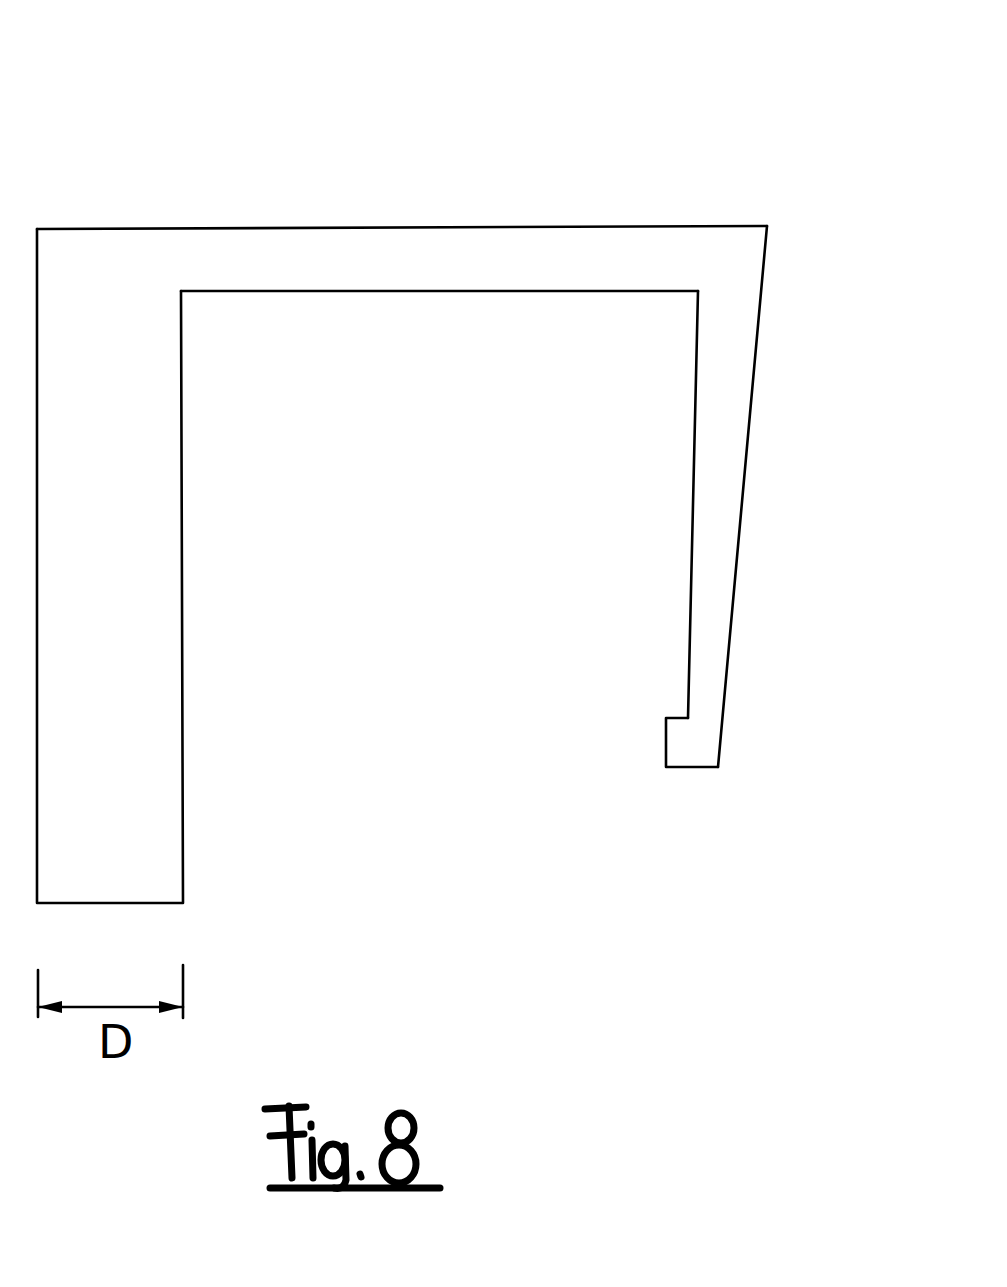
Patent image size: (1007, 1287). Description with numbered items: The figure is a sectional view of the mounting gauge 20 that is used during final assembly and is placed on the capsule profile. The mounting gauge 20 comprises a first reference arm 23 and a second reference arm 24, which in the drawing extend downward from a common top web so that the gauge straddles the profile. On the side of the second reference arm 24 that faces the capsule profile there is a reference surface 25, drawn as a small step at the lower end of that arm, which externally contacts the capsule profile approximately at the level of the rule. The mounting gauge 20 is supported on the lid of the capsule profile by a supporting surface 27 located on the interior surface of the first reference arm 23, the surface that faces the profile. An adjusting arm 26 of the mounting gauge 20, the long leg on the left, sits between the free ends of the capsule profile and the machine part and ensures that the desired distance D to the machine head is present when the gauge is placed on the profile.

The mounting gauge 20 is at (380, 122).
The first reference arm 23 is at (520, 241).
The second reference arm 24 is at (728, 487).
The reference surface 25 is at (667, 750).
The adjusting arm 26 is at (150, 688).
The supporting surface 27 is at (513, 292).